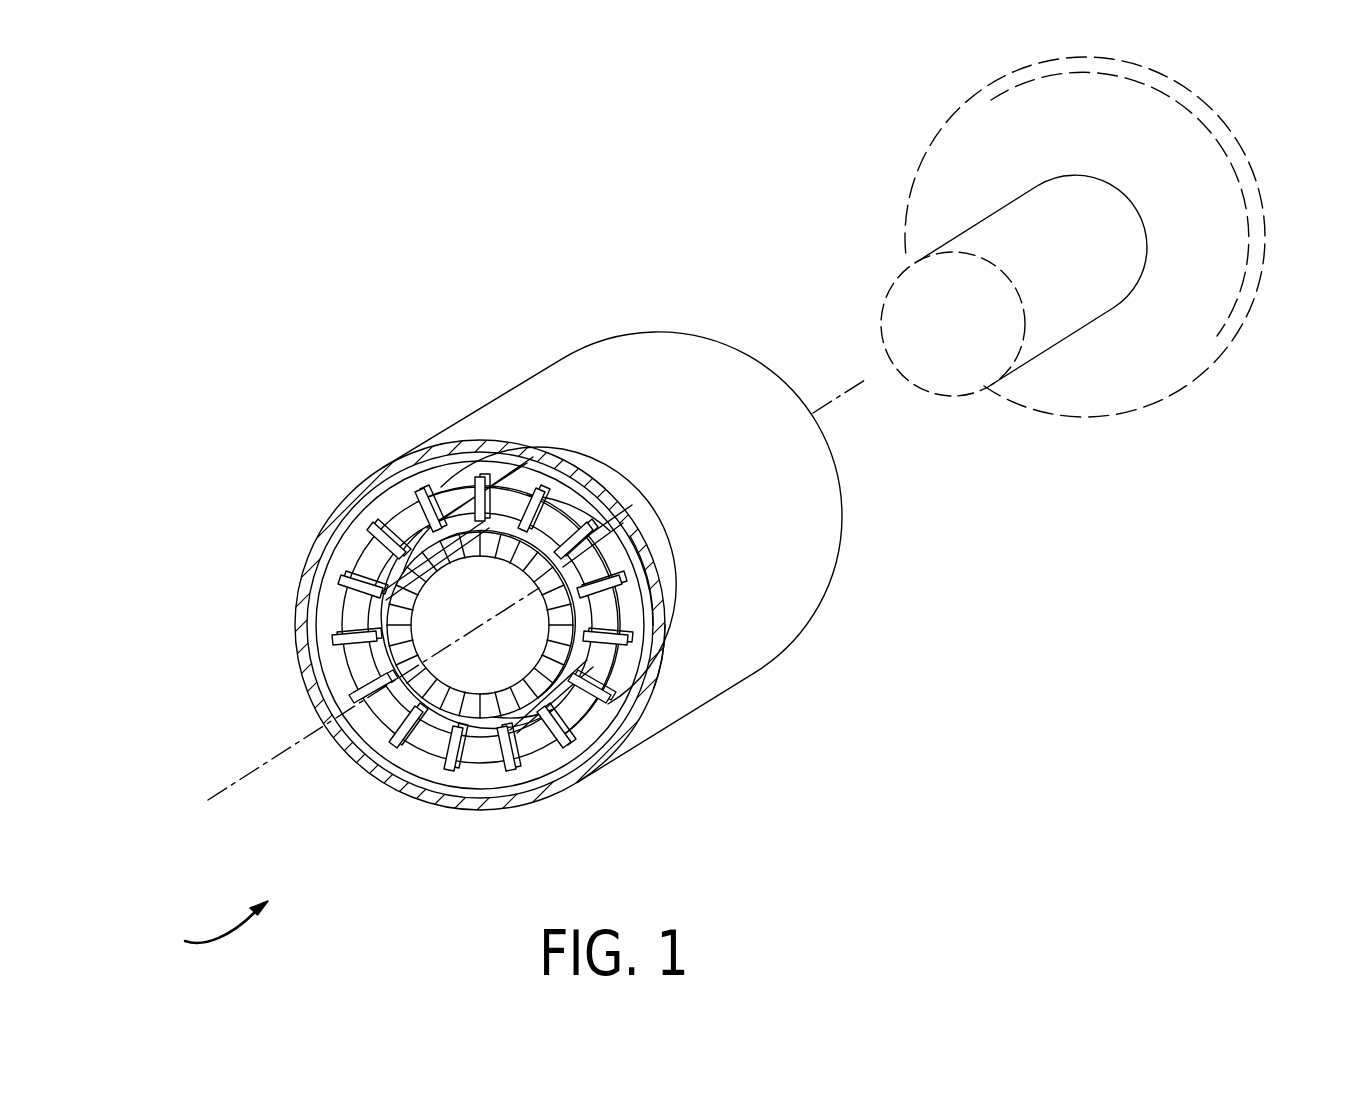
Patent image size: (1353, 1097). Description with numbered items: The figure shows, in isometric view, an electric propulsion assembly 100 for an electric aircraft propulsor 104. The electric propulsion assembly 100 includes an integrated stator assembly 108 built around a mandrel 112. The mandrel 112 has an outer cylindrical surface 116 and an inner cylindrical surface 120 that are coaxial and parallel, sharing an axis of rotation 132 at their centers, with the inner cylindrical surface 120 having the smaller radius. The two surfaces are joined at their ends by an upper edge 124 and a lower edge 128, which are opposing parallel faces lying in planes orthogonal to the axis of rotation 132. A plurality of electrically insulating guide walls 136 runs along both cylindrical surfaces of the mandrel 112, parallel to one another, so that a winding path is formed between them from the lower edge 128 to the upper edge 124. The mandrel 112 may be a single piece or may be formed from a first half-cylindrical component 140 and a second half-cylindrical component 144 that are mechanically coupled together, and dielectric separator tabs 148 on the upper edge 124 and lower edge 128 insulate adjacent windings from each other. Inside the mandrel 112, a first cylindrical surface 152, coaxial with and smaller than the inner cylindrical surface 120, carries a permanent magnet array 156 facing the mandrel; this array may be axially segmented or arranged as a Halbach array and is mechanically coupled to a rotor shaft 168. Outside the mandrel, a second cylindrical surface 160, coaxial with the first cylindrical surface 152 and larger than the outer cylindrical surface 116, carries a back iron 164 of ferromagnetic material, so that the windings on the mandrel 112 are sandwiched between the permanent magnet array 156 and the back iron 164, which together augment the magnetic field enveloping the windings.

The electric propulsion assembly 100 is at (205, 928).
The electric aircraft propulsor 104 is at (1115, 382).
The integrated stator assembly 108 is at (395, 520).
The mandrel 112 is at (540, 748).
The outer cylindrical surface 116 is at (597, 717).
The inner cylindrical surface 120 is at (375, 542).
The upper edge 124 is at (357, 613).
The lower edge 128 is at (843, 532).
The axis of rotation 132 is at (247, 780).
The electrically insulating guide walls 136 is at (570, 463).
The first half-cylindrical component 140 is at (645, 540).
The second half-cylindrical component 144 is at (665, 592).
The dielectric separator tabs 148 is at (415, 468).
The first cylindrical surface 152 is at (433, 730).
The permanent magnet array 156 is at (480, 715).
The second cylindrical surface 160 is at (501, 447).
The back iron 164 is at (757, 644).
The rotor shaft 168 is at (937, 387).